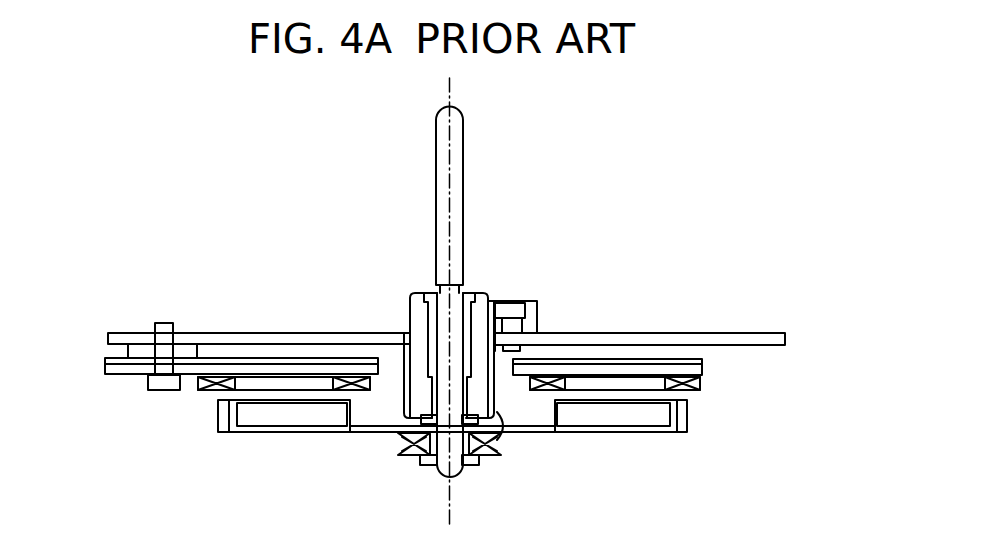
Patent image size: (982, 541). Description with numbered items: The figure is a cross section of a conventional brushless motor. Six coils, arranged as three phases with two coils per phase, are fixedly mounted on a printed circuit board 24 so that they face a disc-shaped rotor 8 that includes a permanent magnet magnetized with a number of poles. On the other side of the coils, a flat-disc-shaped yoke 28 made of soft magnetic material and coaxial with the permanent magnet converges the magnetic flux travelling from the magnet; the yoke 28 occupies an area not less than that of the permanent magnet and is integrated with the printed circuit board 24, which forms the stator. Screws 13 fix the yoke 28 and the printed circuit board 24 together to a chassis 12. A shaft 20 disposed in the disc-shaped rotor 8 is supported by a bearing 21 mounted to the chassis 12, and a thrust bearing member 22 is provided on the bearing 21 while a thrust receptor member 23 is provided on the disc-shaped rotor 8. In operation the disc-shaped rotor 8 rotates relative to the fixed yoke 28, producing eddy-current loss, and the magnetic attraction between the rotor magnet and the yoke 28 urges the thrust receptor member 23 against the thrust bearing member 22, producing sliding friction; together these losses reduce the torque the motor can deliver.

The shaft 20 is at (453, 180).
The bearing 21 is at (418, 313).
The thrust bearing member 22 is at (471, 413).
The thrust receptor member 23 is at (483, 450).
The chassis 12 is at (283, 338).
The screws 13 is at (165, 352).
The printed circuit board 24 is at (135, 370).
The yoke 28 is at (626, 359).
The disc-shaped rotor 8 is at (610, 412).